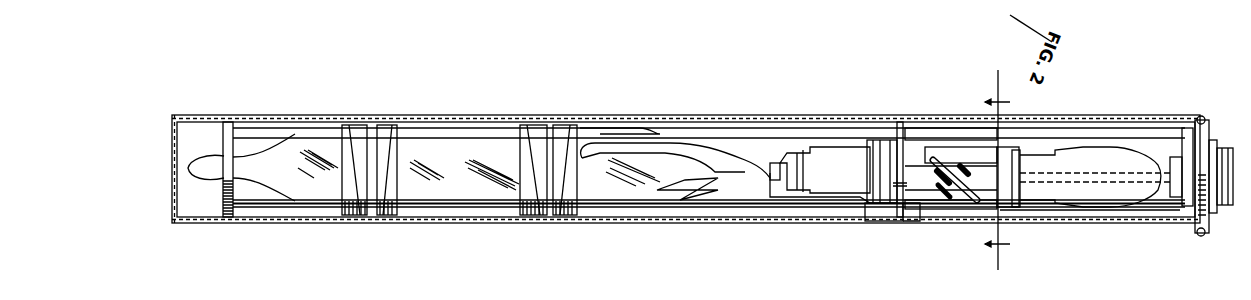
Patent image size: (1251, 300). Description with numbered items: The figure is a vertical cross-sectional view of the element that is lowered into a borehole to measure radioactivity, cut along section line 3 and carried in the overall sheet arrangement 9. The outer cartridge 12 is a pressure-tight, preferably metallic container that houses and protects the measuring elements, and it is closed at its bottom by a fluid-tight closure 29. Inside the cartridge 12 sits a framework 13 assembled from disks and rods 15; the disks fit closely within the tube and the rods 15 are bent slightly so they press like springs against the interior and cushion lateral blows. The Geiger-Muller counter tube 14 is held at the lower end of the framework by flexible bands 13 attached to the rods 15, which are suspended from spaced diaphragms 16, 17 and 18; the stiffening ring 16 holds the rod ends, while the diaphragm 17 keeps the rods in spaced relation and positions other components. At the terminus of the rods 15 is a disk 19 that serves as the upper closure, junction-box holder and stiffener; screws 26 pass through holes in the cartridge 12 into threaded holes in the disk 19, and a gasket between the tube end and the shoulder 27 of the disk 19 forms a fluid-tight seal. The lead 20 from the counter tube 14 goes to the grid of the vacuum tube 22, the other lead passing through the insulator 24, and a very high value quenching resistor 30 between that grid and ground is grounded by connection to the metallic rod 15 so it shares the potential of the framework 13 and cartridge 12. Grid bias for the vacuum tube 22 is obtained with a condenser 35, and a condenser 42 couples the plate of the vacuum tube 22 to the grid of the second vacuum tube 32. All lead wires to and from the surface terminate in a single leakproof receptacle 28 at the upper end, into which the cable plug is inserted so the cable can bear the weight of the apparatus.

The tubular casing 9 is at (660, 115).
The cartridge 12 is at (515, 223).
The framework 13 is at (388, 135).
The Geiger-Muller counter tube 14 is at (487, 150).
The rods 15 is at (723, 140).
The stiffening ring 16 is at (228, 128).
The diaphragm 17 is at (900, 128).
The diaphragm 18 is at (1020, 222).
The disk 19 is at (1203, 150).
The lead 20 is at (760, 160).
The vacuum tube 22 is at (833, 172).
The insulator 24 is at (882, 221).
The screws 26 is at (1200, 117).
The shoulder 27 is at (1216, 220).
The receptacle 28 is at (1227, 148).
The fluid-tight closure 29 is at (172, 125).
The resistor 30 is at (853, 147).
The vacuum tube 32 is at (1103, 158).
The condenser 35 is at (982, 153).
The condenser 42 is at (953, 173).
The section line 3- 3 is at (1000, 172).